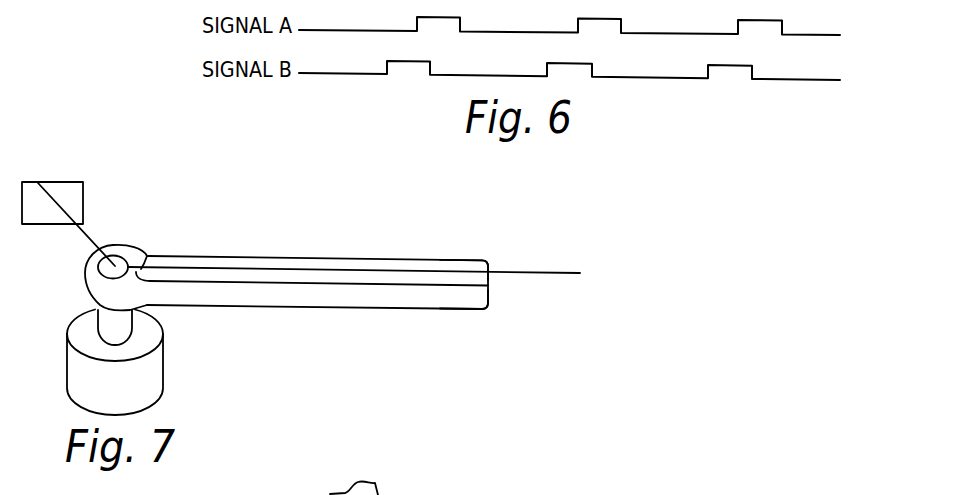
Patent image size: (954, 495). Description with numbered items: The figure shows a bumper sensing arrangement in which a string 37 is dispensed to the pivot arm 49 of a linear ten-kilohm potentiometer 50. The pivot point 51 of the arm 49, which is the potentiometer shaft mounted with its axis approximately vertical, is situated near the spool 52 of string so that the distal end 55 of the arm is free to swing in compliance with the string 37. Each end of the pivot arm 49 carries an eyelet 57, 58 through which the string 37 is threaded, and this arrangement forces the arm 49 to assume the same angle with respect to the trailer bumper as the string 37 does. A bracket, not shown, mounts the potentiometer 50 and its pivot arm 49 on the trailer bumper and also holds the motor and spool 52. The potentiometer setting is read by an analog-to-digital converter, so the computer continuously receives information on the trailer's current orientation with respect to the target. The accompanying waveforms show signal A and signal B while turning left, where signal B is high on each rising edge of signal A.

The string 37 is at (345, 270).
The pivot arm 49 is at (468, 308).
The linear potentiometer 50 is at (163, 364).
The pivot point 51 is at (100, 262).
The spool 52 is at (52, 182).
The distal end 55 is at (488, 298).
The eyelet 57 is at (147, 255).
The eyelet 58 is at (468, 262).